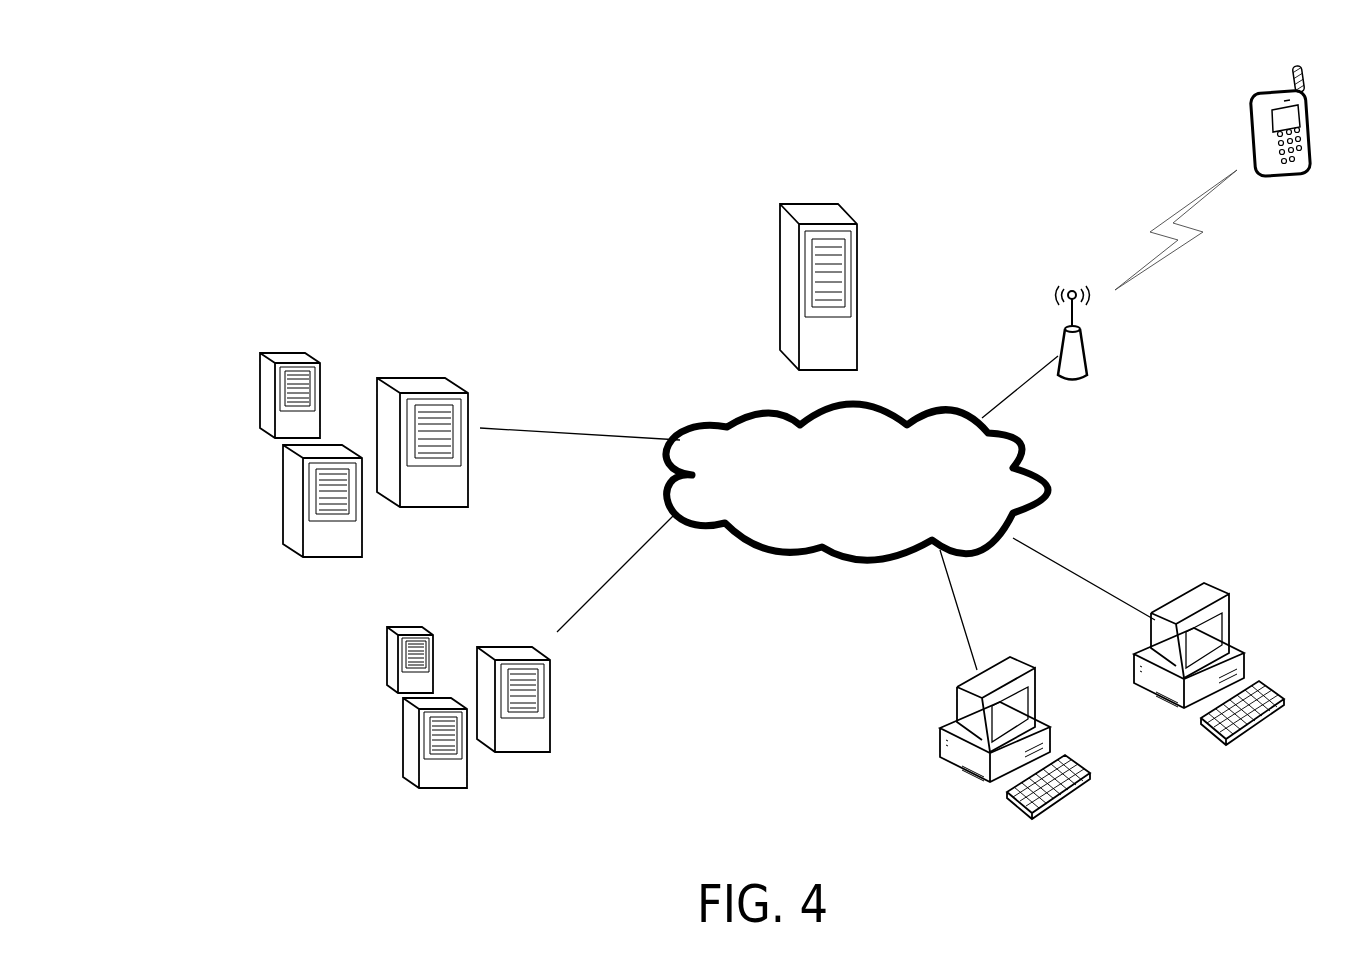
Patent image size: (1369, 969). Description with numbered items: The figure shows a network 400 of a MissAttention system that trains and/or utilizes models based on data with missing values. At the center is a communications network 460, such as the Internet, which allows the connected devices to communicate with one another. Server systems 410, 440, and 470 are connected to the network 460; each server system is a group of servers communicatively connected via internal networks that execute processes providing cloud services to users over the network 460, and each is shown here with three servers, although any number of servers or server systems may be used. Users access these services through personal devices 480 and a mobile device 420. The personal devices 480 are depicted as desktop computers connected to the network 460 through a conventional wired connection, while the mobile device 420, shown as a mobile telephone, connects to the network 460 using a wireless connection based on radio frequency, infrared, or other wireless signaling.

The network 400 is at (684, 227).
The server system 410 is at (817, 215).
The mobile device 420 is at (1265, 97).
The server system 440 is at (462, 372).
The communications network 460 is at (818, 552).
The server system 470 is at (293, 688).
The personal devices 480 is at (1085, 786).